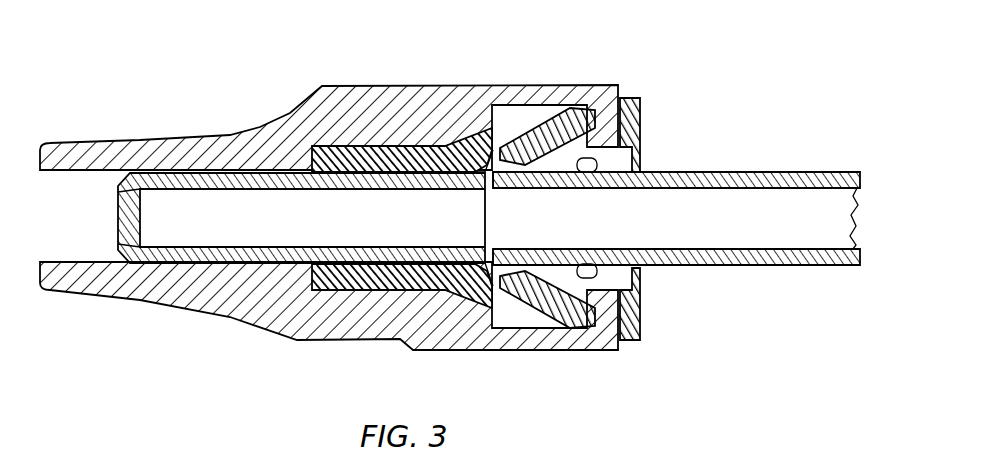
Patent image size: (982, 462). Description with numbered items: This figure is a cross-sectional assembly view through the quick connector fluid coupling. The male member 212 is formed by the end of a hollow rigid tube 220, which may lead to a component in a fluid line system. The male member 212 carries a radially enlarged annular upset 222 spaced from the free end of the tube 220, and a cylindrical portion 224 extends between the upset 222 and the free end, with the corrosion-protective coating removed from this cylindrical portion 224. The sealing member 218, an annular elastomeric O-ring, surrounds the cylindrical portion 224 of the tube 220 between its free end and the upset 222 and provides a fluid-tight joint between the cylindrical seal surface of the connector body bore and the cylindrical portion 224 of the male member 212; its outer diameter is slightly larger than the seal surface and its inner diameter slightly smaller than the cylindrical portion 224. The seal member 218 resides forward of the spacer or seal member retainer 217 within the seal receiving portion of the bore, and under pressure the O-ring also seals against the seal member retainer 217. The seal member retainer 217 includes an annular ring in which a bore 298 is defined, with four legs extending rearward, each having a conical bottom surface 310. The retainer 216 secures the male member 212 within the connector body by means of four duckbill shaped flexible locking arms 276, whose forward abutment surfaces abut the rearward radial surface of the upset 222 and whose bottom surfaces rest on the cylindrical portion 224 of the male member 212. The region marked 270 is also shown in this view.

The seal member retainer 217 is at (390, 148).
The cylindrical portion 224 is at (252, 188).
The tube 220 is at (758, 171).
The sealing member 218 is at (343, 188).
The retainer 216 is at (563, 120).
The locking arms 276 is at (547, 283).
The bore 298 is at (575, 178).
The upset 222 is at (503, 143).
The tube joint 270 is at (487, 165).
The conical bottom surface 310 is at (457, 188).
The male member 212 is at (517, 188).